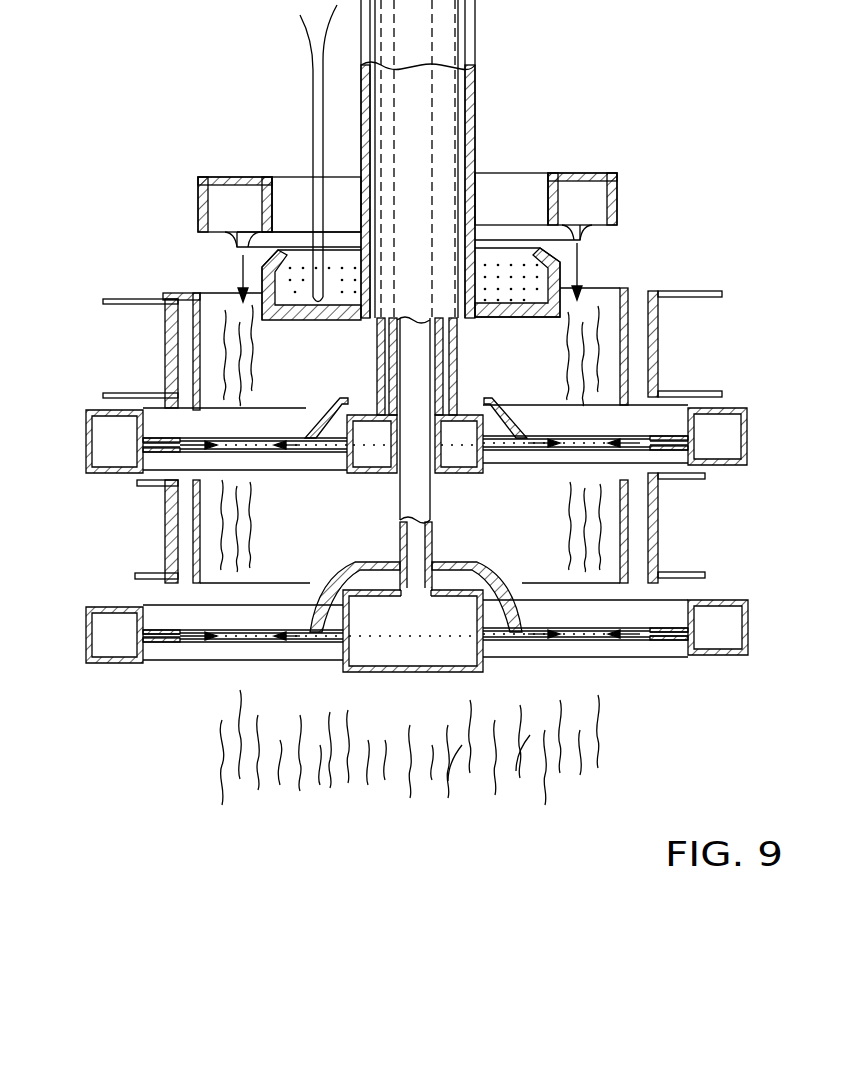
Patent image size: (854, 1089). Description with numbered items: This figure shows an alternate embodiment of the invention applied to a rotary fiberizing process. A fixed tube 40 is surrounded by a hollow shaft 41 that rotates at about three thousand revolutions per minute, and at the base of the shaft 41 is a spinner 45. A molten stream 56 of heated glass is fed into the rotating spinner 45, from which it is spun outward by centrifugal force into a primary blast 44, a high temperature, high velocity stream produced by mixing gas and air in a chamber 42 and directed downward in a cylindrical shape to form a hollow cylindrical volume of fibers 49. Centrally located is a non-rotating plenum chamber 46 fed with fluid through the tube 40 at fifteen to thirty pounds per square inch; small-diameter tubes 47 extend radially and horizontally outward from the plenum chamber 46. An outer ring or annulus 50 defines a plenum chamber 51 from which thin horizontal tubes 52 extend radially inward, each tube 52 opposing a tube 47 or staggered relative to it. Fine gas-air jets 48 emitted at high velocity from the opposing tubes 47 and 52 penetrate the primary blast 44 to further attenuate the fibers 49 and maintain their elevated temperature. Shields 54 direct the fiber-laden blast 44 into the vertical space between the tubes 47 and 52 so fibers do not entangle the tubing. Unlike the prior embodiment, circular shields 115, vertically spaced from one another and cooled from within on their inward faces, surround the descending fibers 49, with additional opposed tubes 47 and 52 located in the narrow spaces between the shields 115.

The fixed tube 40 is at (457, 358).
The hollow shaft 41 is at (477, 108).
The chamber 42 is at (295, 177).
The blast 44 is at (582, 260).
The spinner 45 is at (535, 320).
The plenum chamber 46 is at (375, 455).
The tubes 47 is at (330, 455).
The jets 48 is at (185, 437).
The fibers 49 is at (222, 308).
The outer ring or annulus 50 is at (125, 476).
The plenum chamber 51 is at (120, 445).
The tubes 52 is at (170, 448).
The shields 54 is at (332, 407).
The molten stream 56 is at (313, 66).
The circular shields 115 is at (162, 358).